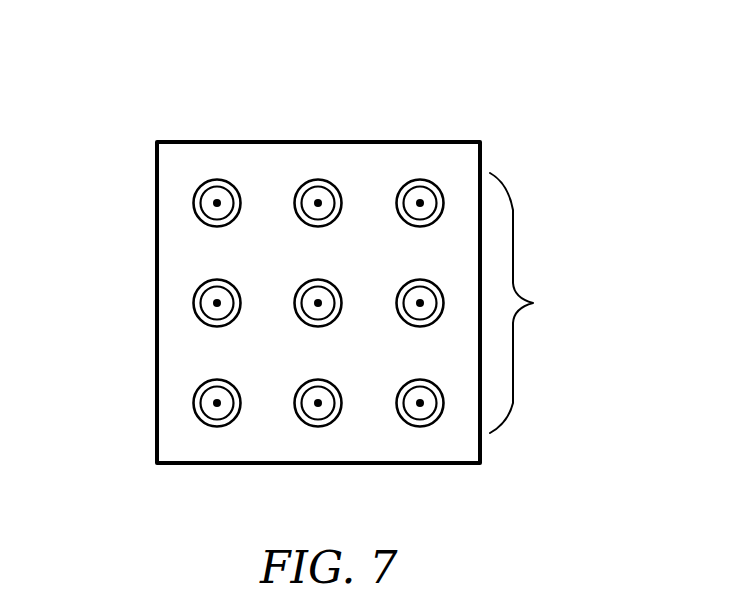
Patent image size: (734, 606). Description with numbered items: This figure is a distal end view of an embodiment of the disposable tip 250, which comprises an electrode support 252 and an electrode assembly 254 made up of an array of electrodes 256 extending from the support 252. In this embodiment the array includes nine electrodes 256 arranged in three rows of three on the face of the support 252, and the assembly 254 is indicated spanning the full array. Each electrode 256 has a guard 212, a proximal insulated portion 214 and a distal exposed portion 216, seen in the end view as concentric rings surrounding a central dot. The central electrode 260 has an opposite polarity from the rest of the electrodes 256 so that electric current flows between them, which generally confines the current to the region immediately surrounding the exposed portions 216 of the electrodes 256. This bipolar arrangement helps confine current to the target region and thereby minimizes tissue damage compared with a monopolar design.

The tip 250 is at (543, 70).
The electrode support 252 is at (422, 140).
The electrode assembly 254 is at (537, 303).
The electrodes 256 is at (193, 413).
The central electrode 260 is at (340, 288).
The guard 212 is at (201, 289).
The proximal insulated portion 214 is at (201, 300).
The distal exposed portion 216 is at (213, 306).